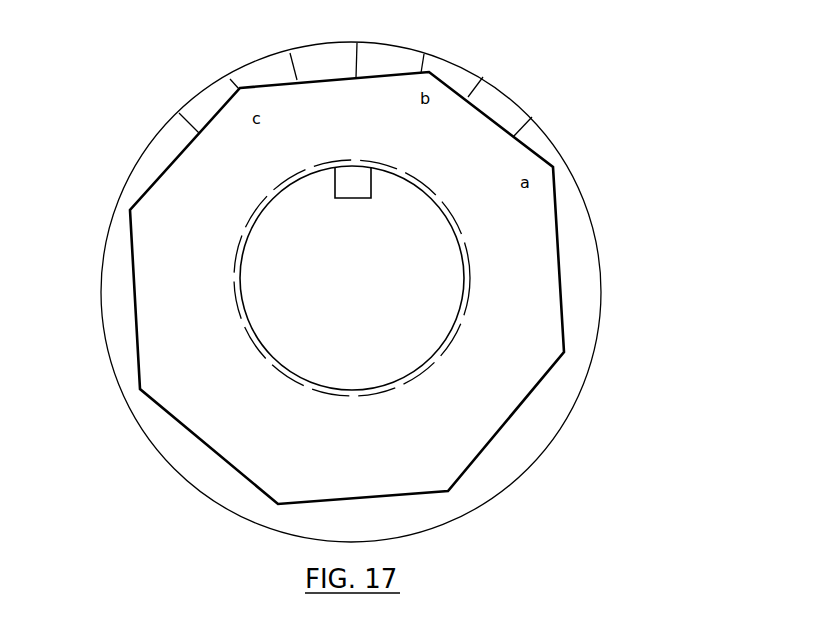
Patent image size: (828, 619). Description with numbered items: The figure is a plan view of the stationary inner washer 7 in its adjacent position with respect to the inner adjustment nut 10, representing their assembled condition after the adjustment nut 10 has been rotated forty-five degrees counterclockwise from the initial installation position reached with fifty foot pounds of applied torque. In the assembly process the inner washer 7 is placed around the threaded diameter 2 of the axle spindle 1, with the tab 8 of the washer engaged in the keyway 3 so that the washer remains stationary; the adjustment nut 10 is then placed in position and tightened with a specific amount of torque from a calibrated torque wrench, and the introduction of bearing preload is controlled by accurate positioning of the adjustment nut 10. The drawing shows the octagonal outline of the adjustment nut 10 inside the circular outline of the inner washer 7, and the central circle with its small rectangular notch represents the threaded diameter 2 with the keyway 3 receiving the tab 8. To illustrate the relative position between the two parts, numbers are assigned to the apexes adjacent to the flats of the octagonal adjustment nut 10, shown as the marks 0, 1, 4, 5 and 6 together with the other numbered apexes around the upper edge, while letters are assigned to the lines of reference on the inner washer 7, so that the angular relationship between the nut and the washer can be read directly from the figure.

The inner washer 7 is at (572, 210).
The inner adjustment nut 10 is at (513, 348).
The threaded diameter 2 is at (278, 298).
The keyway 3 is at (392, 228).
The tab 8 is at (348, 187).
The position mark 0 is at (541, 108).
The axle spindle 1 is at (486, 69).
The position mark 4 is at (285, 44).
The position mark 5 is at (224, 59).
The position mark 6 is at (173, 105).